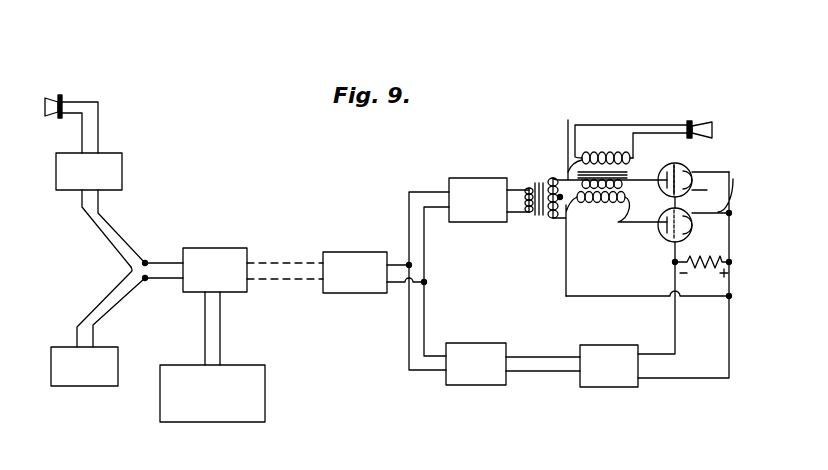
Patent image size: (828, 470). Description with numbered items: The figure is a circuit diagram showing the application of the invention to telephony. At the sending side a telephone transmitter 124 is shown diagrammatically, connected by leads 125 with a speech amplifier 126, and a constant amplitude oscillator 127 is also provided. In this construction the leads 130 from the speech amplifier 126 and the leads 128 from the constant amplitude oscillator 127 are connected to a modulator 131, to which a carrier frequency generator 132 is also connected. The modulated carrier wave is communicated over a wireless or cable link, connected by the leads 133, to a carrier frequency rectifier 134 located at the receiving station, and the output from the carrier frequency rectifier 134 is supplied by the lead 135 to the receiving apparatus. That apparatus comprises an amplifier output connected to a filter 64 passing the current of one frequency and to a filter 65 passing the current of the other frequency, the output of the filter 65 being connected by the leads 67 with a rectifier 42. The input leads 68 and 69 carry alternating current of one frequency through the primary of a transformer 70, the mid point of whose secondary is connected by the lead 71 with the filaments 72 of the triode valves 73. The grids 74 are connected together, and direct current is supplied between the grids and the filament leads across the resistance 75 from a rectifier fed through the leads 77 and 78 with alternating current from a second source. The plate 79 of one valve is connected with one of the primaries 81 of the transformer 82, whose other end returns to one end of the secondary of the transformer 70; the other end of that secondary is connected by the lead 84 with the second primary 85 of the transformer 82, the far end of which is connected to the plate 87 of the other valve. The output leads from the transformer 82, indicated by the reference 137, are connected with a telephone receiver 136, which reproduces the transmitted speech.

The telephone transmitter 124 is at (56, 96).
The leads 125 is at (99, 126).
The speech amplifier 126 is at (113, 170).
The leads 130 is at (121, 240).
The leads 128 is at (115, 292).
The constant amplitude oscillator 127 is at (87, 377).
The modulator 131 is at (212, 258).
The carrier frequency generator 132 is at (218, 407).
The leads 133 is at (275, 262).
The carrier frequency rectifier 134 is at (343, 262).
The lead 135 is at (401, 270).
The filter 64 is at (467, 192).
The input lead 69 is at (518, 215).
The transformer 70 is at (534, 180).
The input lead 68 is at (516, 188).
The lead 71 is at (560, 199).
The lead 84 is at (560, 172).
The second primary 85 is at (563, 138).
The transformer 82 is at (627, 149).
The conductor 137 is at (631, 140).
The telephone receiver 136 is at (712, 128).
The triode valve 73 is at (670, 199).
The primary 81 is at (610, 192).
The grid 74 is at (690, 163).
The plate 87 is at (670, 159).
The plate 79 is at (665, 233).
The filaments 72 is at (732, 192).
The resistance 75 is at (708, 255).
The lead 77 is at (673, 327).
The lead 78 is at (728, 330).
The filter 65 is at (475, 352).
The leads 67 is at (542, 368).
The rectifier 42 is at (618, 338).